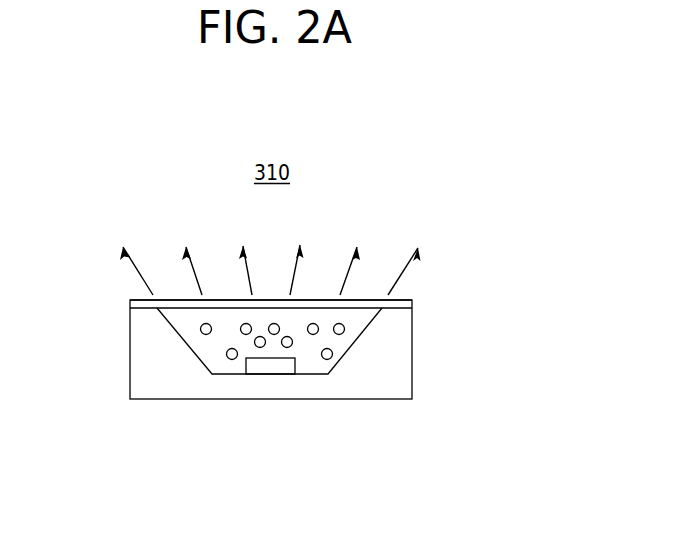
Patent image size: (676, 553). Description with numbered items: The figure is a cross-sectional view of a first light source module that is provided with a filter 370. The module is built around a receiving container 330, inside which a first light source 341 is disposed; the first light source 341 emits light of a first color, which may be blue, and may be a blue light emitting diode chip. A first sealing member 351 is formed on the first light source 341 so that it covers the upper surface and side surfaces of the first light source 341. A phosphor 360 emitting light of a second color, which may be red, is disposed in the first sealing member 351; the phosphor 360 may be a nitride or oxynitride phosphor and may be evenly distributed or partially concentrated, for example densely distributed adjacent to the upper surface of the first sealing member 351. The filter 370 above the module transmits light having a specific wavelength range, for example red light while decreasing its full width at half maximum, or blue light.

The receiving container 330 is at (161, 367).
The first light source 341 is at (267, 368).
The first sealing member 351 is at (215, 358).
The phosphor 360 is at (327, 360).
The filter 370 is at (130, 301).